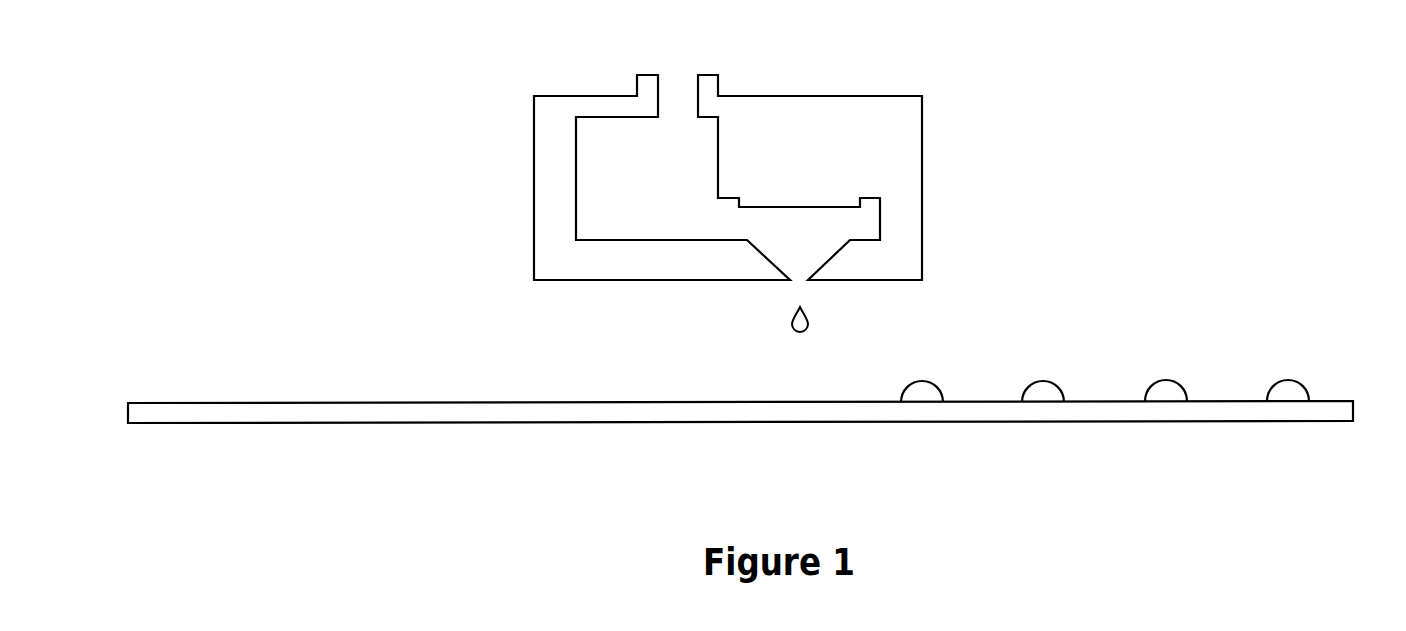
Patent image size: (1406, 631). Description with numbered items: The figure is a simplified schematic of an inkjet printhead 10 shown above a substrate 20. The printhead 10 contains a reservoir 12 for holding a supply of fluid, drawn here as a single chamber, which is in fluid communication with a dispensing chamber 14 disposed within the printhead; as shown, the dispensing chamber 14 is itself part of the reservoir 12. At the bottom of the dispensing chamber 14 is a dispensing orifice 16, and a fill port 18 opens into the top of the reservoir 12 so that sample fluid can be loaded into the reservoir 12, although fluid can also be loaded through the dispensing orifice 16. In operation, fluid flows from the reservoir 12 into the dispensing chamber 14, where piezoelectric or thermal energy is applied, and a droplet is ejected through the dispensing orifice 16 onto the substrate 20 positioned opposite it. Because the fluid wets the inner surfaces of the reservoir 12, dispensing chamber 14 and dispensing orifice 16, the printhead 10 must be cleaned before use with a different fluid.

The inkjet printhead 10 is at (661, 165).
The reservoir 12 is at (630, 192).
The dispensing chamber 14 is at (785, 260).
The dispensing orifice 16 is at (804, 286).
The fill port 18 is at (681, 72).
The substrate 20 is at (1355, 408).